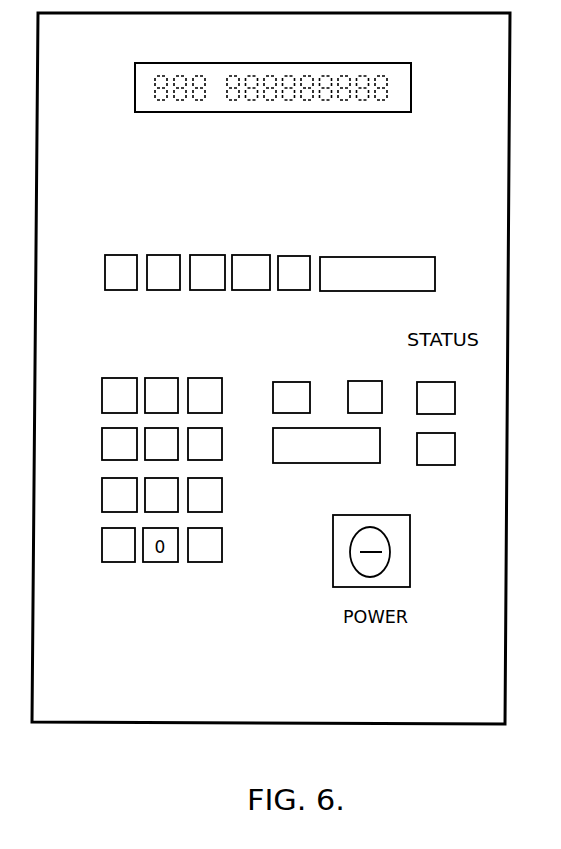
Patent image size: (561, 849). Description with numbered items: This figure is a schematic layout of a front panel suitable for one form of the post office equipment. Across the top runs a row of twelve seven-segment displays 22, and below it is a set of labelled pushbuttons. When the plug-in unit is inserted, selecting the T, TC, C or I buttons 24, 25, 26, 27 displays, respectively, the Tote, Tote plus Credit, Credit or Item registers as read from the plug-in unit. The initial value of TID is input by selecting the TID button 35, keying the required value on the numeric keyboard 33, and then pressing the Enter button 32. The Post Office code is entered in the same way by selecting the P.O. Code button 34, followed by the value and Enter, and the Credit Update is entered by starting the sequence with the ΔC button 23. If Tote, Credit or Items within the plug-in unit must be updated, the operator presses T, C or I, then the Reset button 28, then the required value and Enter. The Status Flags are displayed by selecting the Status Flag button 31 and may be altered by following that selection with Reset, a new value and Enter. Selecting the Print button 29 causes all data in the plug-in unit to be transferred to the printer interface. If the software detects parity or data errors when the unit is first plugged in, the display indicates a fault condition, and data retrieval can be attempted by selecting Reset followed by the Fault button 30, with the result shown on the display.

The seven-segment displays 22 is at (405, 68).
The ΔC pushbutton 23 is at (120, 290).
The T pushbutton 24 is at (165, 290).
The TC pushbutton 25 is at (208, 290).
The C pushbutton 26 is at (252, 290).
The I pushbutton 27 is at (295, 290).
The Reset pushbutton 28 is at (375, 291).
The Print pushbutton 29 is at (273, 395).
The Fault pushbutton 30 is at (348, 388).
The Status Flag pushbutton 31 is at (455, 398).
The Enter pushbutton 32 is at (380, 452).
The numeric keyboard 33 is at (98, 386).
The P.O. Code pushbutton 34 is at (102, 540).
The TID pushbutton 35 is at (222, 548).